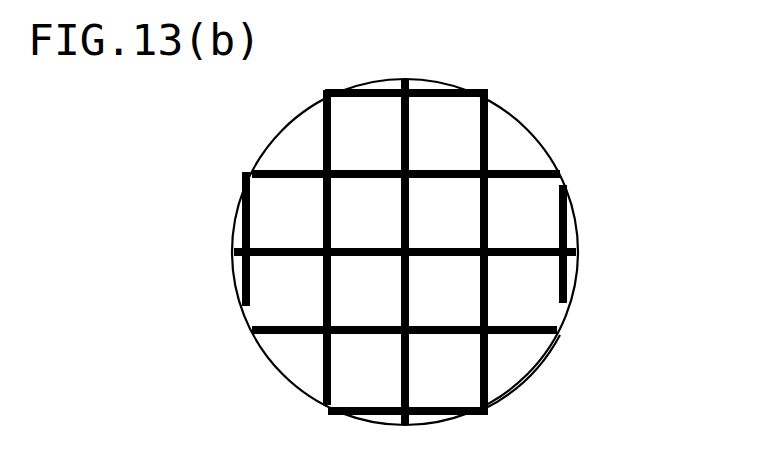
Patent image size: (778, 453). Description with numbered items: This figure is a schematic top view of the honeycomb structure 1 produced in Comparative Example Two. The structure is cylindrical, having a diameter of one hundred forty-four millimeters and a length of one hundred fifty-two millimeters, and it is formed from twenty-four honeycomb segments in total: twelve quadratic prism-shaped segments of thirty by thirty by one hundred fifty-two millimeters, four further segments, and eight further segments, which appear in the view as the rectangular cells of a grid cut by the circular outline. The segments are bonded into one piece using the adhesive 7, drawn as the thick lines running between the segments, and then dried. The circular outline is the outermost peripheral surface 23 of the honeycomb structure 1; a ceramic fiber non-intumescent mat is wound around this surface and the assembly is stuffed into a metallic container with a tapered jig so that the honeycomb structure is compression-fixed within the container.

The semiconductor wafer 1 is at (420, 59).
The adhesive 7 is at (563, 287).
The outermost peripheral surface 23 is at (515, 368).